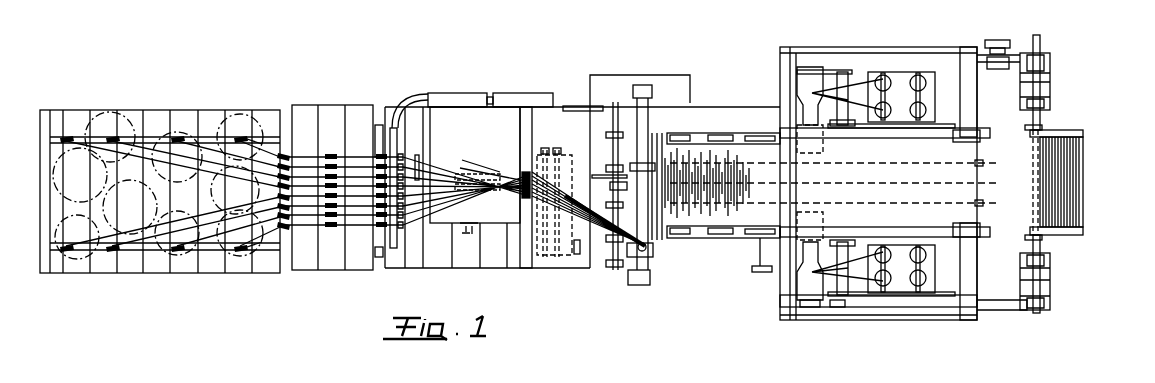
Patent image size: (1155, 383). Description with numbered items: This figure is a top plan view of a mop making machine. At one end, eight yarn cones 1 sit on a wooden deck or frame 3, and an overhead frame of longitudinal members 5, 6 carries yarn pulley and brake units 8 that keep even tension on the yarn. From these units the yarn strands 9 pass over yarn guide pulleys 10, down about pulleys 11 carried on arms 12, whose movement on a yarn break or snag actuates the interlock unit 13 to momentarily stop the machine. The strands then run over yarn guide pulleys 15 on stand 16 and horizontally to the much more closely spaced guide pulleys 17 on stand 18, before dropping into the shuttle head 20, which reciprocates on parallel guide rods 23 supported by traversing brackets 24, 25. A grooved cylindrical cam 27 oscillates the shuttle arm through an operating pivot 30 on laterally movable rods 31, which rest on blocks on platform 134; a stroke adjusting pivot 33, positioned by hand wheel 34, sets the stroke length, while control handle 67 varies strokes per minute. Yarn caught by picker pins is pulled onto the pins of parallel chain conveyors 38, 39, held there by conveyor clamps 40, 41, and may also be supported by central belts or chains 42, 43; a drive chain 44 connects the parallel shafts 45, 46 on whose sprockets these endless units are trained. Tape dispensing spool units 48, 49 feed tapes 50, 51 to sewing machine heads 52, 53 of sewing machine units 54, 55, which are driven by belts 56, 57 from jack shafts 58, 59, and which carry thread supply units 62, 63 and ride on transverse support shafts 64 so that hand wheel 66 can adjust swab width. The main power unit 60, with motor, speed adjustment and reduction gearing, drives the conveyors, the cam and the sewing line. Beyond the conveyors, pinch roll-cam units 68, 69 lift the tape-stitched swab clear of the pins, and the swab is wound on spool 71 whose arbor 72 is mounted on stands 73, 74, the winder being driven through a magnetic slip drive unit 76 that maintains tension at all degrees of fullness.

The yarn cones 1 is at (79, 262).
The wooden deck or frame 3 is at (210, 262).
The longitudinal member 5 is at (260, 140).
The longitudinal member 6 is at (262, 262).
The yarn pulley and brake units 8 is at (126, 252).
The yarn strands 9 is at (205, 226).
The yarn guide pulleys 10 is at (290, 152).
The pulleys 11 is at (331, 228).
The arms 12 is at (377, 227).
The interlock unit 13 is at (395, 250).
The yarn guide pulleys 15 is at (378, 152).
The stand 16 is at (378, 124).
The guide pulleys 17 is at (523, 170).
The stand 18 is at (527, 115).
The shuttle head 20 is at (654, 258).
The guide rods 23 is at (652, 124).
The traversing bracket 24 is at (643, 85).
The traversing bracket 25 is at (641, 287).
The grooved cylindrical cam 27 is at (566, 165).
The operating pivot 30 is at (530, 212).
The laterally movable rods 31 is at (562, 258).
The stroke adjusting pivot 33 is at (495, 170).
The hand wheel 34 is at (418, 176).
The chain conveyor 38 is at (668, 134).
The chain conveyor 39 is at (650, 248).
The conveyor clamp 40 is at (722, 132).
The conveyor clamp 41 is at (712, 238).
The central belt or chain 42 is at (855, 163).
The central belt or chain 43 is at (858, 205).
The drive chain 44 is at (792, 184).
The shaft 45 is at (590, 108).
The shaft 46 is at (983, 208).
The tape dispensing spool unit 48 is at (763, 133).
The tape dispensing spool unit 49 is at (747, 240).
The tape 50 is at (1083, 141).
The tape 51 is at (1084, 232).
The sewing machine head 52 is at (840, 74).
The sewing machine head 53 is at (798, 276).
The sewing machine unit 54 is at (903, 59).
The sewing machine unit 55 is at (915, 300).
The belt 56 is at (816, 88).
The belt 57 is at (823, 308).
The jack shaft 58 is at (850, 88).
The jack shaft 59 is at (846, 300).
The main power unit 60 is at (452, 100).
The thread supply unit 62 is at (893, 80).
The thread supply unit 63 is at (891, 288).
The support shafts 64 is at (980, 312).
The hand wheel 66 is at (760, 273).
The control handle 67 is at (468, 233).
The pinch roll-cam unit 68 is at (976, 130).
The pinch roll-cam unit 69 is at (978, 240).
The spool 71 is at (1084, 245).
The arbor 72 is at (1046, 253).
The stand 73 is at (1050, 90).
The stand 74 is at (1050, 278).
The magnetic slip drive unit 76 is at (1000, 42).
The platform 134 is at (545, 258).